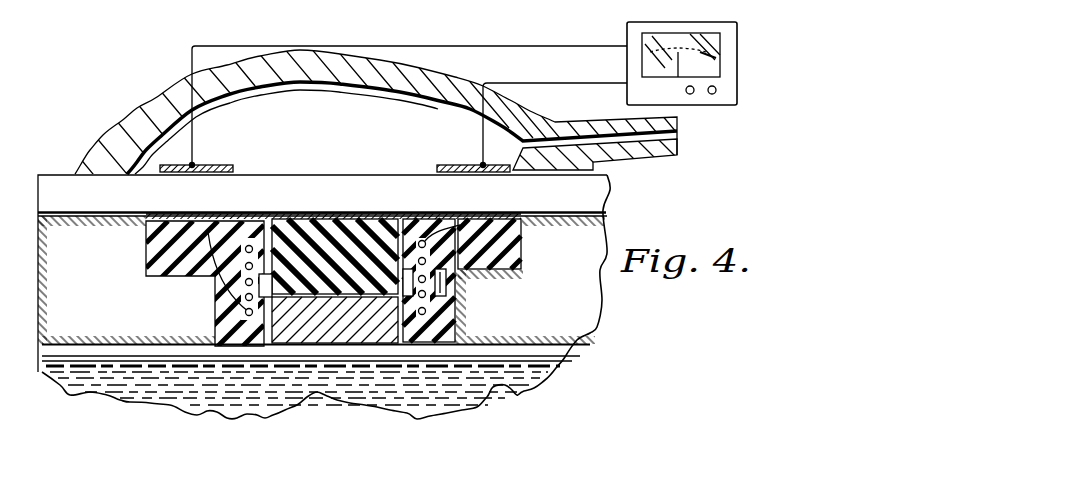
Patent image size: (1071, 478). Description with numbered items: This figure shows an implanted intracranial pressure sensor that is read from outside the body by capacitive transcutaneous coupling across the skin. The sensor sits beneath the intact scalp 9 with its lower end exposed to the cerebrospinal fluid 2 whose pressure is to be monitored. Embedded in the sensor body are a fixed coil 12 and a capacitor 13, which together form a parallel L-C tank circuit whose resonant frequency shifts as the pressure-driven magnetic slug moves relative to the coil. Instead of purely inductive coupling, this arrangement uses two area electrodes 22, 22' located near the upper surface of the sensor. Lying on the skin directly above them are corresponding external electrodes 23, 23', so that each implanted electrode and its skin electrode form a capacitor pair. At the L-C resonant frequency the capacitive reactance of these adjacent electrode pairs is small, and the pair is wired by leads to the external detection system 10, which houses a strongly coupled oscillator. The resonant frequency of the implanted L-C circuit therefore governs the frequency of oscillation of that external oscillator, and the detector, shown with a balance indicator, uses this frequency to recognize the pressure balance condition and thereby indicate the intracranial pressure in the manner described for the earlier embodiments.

The scalp 9 is at (55, 190).
The cerebrospinal fluid 2 is at (516, 394).
The area electrode 22 is at (184, 283).
The fixed coil 12 is at (205, 287).
The capacitor 13 is at (448, 281).
The area electrode 22' is at (516, 244).
The electrode 23 is at (393, 109).
The electrode 23' is at (519, 127).
The external detection system 10 is at (732, 46).